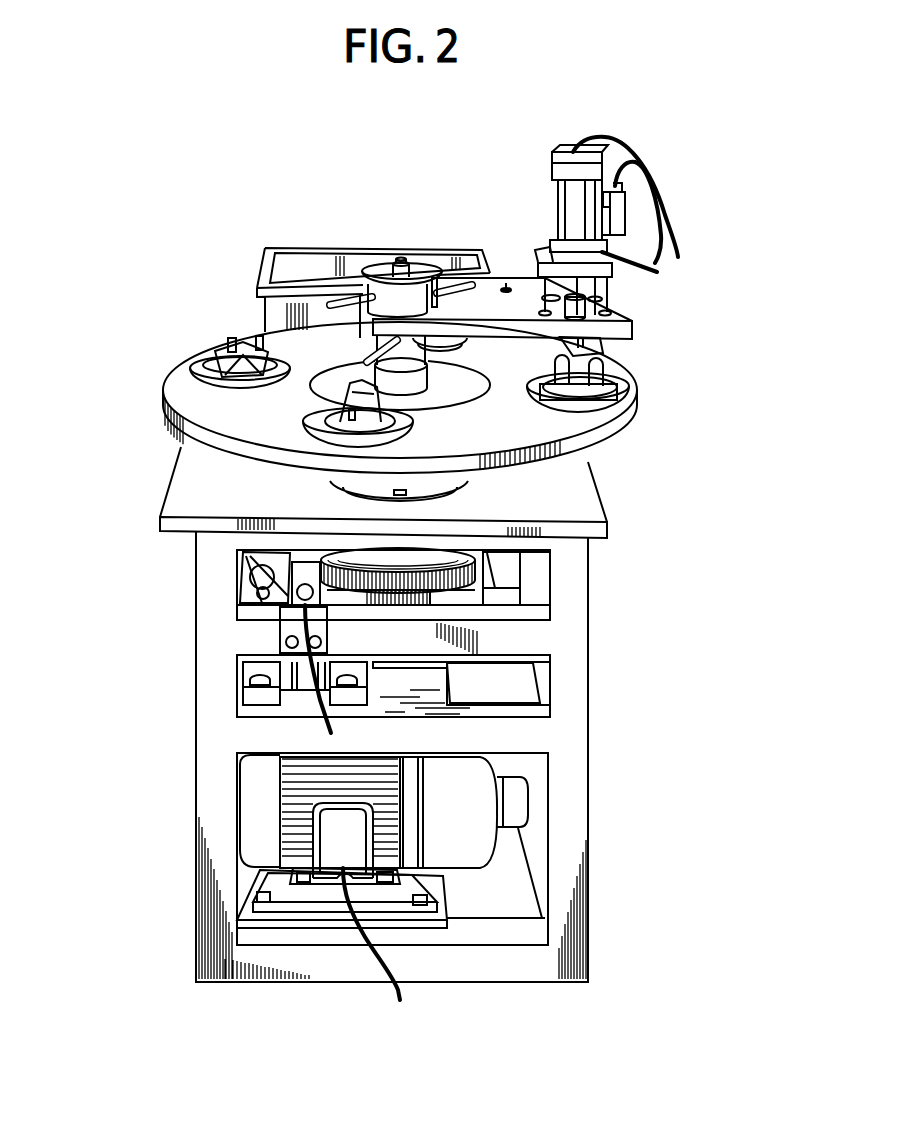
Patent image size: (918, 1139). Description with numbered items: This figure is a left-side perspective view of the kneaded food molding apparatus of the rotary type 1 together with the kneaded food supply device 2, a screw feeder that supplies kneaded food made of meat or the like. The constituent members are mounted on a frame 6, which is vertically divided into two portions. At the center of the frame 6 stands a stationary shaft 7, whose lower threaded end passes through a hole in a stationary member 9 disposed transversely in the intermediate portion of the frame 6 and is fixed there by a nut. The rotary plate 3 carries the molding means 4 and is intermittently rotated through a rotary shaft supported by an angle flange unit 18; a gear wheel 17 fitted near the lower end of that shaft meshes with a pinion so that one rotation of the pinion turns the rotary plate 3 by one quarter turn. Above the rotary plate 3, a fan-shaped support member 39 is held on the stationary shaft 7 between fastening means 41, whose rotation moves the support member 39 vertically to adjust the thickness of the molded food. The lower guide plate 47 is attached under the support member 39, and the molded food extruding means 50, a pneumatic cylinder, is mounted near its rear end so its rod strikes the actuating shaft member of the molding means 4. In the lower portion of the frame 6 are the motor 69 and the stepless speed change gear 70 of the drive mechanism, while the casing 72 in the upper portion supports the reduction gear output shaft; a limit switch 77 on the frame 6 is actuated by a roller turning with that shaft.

The kneaded food molding apparatus of the rotary type 1 is at (666, 410).
The kneaded food supply device 2 is at (432, 231).
The rotary plate 3 is at (565, 437).
The molding means 4 is at (335, 425).
The frame 6 is at (217, 738).
The stationary shaft 7 is at (367, 362).
The stationary member 9 is at (408, 682).
The gear wheel 17 is at (490, 573).
The angle flange unit 18 is at (450, 495).
The support member 39 is at (494, 292).
The fastening means 41 is at (399, 300).
The lower guide plate 47 is at (600, 343).
The molded food extruding means 50 is at (698, 222).
The motor 69 is at (287, 815).
The stepless speed change gear 70 is at (480, 798).
The casing 72 is at (293, 588).
The limit switch 77 is at (290, 597).